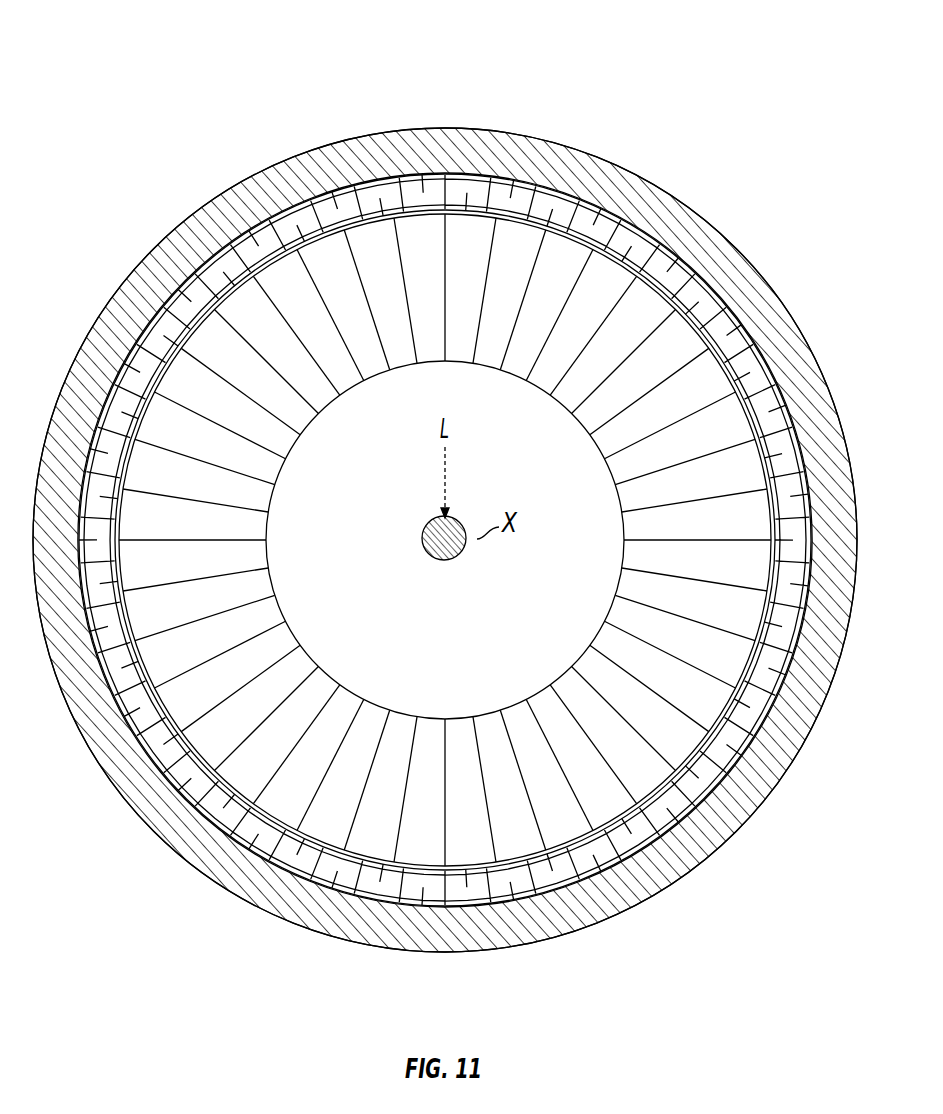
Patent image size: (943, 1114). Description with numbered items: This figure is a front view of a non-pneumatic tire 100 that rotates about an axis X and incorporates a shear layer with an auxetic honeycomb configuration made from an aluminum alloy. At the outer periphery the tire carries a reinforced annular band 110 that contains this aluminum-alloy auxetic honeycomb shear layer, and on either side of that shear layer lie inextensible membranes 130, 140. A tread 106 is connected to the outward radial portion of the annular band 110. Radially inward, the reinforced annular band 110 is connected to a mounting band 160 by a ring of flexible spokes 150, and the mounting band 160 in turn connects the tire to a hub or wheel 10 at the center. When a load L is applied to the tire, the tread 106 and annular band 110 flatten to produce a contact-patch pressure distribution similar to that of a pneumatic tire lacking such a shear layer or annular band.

The tire 100 is at (692, 58).
The tread 106 is at (380, 133).
The reinforced annular band 110 is at (498, 188).
The inextensible membrane 130 is at (233, 797).
The inextensible membrane 140 is at (153, 767).
The flexible spokes 150 is at (259, 571).
The mounting band 160 is at (279, 474).
The hub or wheel 10 is at (449, 658).